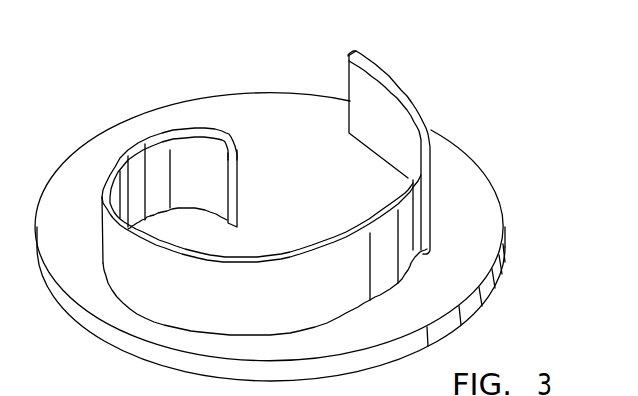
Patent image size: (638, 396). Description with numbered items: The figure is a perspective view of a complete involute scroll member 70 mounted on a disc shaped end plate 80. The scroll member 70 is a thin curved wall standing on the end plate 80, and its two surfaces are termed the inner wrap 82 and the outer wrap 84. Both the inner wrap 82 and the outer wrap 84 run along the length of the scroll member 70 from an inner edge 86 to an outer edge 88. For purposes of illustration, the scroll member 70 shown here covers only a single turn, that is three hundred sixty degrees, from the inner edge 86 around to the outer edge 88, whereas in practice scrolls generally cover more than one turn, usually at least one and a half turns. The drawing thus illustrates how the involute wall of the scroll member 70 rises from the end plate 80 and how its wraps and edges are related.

The involute scroll member 70 is at (427, 102).
The end plate 80 is at (468, 193).
The inner wrap 82 is at (347, 84).
The outer wrap 84 is at (398, 80).
The inner edge 86 is at (230, 176).
The outer edge 88 is at (351, 55).